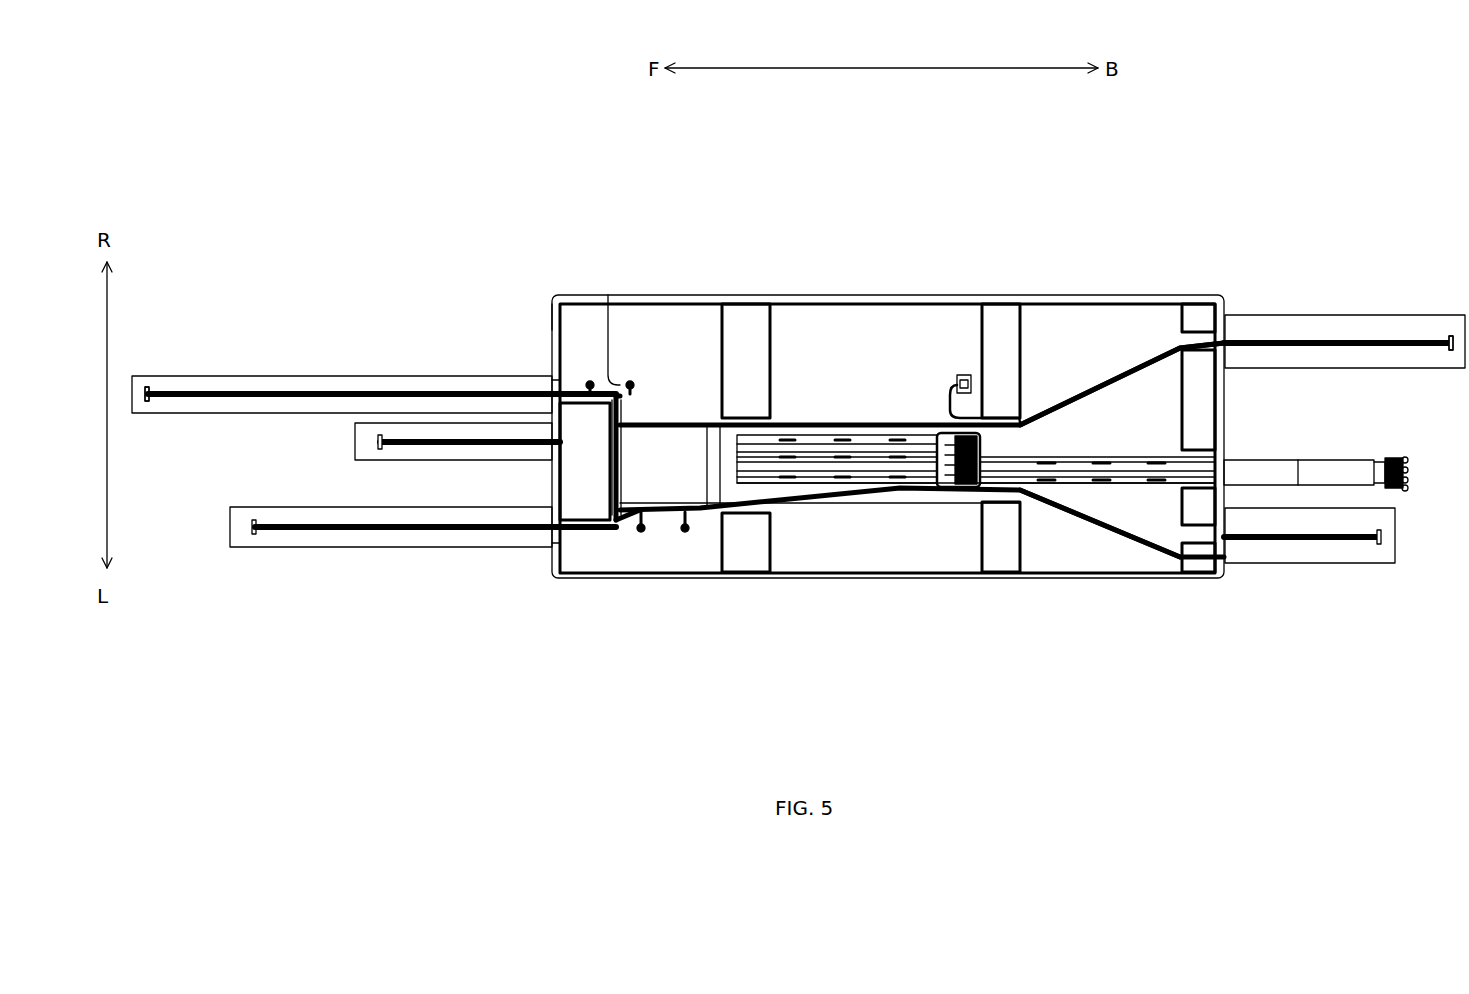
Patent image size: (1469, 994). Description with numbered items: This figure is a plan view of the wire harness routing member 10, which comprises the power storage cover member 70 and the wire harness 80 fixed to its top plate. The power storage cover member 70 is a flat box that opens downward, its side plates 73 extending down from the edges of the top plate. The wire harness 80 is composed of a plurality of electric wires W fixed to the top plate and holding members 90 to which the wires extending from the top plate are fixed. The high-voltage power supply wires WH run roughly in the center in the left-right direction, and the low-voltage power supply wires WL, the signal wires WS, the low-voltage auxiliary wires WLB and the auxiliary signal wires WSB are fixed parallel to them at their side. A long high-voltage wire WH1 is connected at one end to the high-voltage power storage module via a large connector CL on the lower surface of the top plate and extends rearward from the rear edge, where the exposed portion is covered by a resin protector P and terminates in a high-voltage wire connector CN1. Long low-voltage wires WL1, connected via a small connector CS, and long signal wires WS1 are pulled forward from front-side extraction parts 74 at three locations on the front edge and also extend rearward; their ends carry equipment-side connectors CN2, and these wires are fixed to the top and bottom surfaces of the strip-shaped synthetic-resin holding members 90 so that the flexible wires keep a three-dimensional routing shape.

The wire harness routing member 10 is at (990, 265).
The power storage cover member 70 is at (957, 583).
The side plates 73 is at (548, 315).
The front-side extraction parts 74 is at (537, 430).
The wire harness 80 is at (362, 572).
The holding members 90 is at (368, 515).
The electric wires W is at (1080, 380).
The low-voltage power supply wires WL is at (815, 425).
The signal wires WS is at (873, 425).
The long low-voltage wires WL1 is at (418, 513).
The long signal wires WS1 is at (457, 513).
The low-voltage auxiliary wires WLB is at (790, 515).
The auxiliary signal wires WSB is at (840, 510).
The high-voltage power supply wires WH is at (1105, 487).
The long high-voltage wire WH1 is at (1338, 447).
The large connector CL is at (950, 432).
The small connector CS is at (685, 535).
The high-voltage wire connector CN1 is at (1410, 478).
The equipment-side connectors CN2 is at (145, 405).
The resin protector P is at (1278, 462).